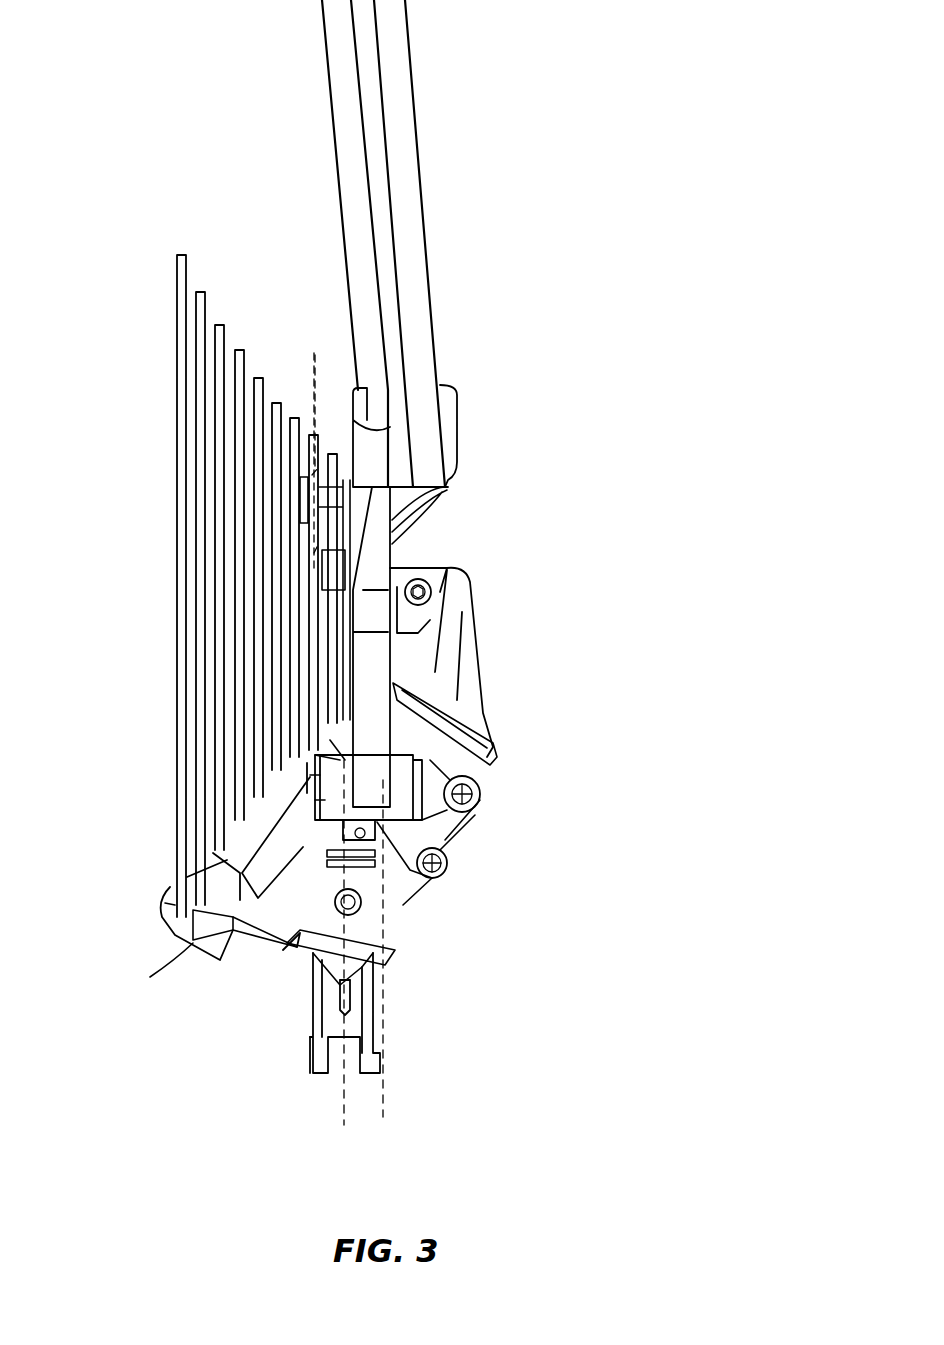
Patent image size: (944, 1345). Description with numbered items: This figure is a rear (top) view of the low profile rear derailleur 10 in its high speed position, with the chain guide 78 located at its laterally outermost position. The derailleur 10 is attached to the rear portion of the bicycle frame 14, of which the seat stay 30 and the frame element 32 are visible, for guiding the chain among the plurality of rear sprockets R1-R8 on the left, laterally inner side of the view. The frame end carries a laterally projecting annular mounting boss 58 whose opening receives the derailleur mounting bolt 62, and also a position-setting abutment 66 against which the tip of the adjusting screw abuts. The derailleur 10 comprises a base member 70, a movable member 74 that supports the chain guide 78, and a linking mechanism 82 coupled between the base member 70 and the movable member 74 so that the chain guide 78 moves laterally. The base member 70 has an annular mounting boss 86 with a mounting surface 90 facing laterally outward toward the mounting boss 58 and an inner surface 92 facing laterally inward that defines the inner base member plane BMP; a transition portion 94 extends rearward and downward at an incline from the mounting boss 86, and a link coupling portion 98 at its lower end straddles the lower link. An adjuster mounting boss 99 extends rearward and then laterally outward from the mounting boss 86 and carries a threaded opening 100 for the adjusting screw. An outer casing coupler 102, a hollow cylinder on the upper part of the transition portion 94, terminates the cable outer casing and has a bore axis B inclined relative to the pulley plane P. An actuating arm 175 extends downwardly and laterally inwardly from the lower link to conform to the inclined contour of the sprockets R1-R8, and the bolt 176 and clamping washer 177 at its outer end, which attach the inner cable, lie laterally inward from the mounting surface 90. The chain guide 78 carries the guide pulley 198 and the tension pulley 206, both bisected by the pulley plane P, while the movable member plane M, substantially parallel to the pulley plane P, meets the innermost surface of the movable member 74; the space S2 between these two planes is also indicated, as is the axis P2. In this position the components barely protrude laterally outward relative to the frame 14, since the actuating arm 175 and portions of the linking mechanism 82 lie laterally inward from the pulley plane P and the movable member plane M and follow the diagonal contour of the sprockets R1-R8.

The rear derailleur 10 is at (663, 720).
The bicycle frame 14 is at (455, 92).
The seat stay 30 is at (420, 258).
The base member 32 is at (397, 653).
The mounting boss 58 is at (400, 790).
The derailleur mounting bolt 62 is at (317, 758).
The position-setting abutment 66 is at (398, 858).
The base member 70 is at (292, 953).
The movable member 74 is at (493, 625).
The chain guide 78 is at (395, 1010).
The linking mechanism 82 is at (470, 838).
The annular mounting boss 86 is at (320, 775).
The mounting surface 90 is at (337, 750).
The inner surface 92 is at (323, 790).
The transition portion 94 is at (270, 867).
The link coupling portion 98 is at (377, 957).
The adjuster mounting boss 99 is at (320, 800).
The threaded opening 100 is at (325, 822).
The outer casing coupler 102 is at (173, 903).
The actuating arm 175 is at (160, 917).
The bolt 176 is at (217, 947).
The clamping washer 177 is at (150, 977).
The guide pulley 198 is at (343, 575).
The tension pulley 206 is at (336, 997).
The rear sprockets R1-R8 is at (218, 255).
The inner base member plane BMP is at (313, 372).
The pulley plane P is at (340, 1108).
The movable member plane M is at (383, 1115).
The second pivot axis P2 is at (397, 693).
The space S2 is at (366, 1108).
The bore axis B is at (277, 947).